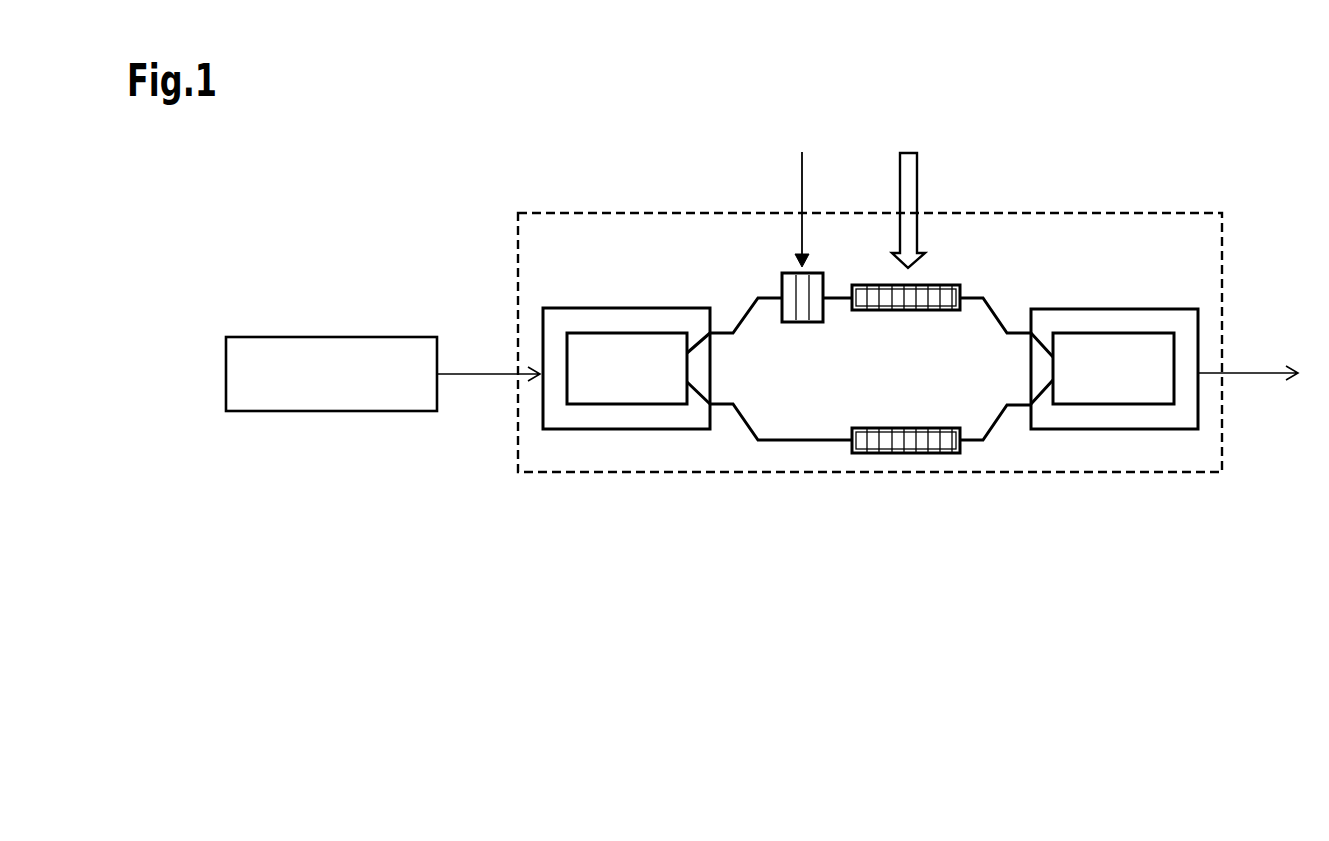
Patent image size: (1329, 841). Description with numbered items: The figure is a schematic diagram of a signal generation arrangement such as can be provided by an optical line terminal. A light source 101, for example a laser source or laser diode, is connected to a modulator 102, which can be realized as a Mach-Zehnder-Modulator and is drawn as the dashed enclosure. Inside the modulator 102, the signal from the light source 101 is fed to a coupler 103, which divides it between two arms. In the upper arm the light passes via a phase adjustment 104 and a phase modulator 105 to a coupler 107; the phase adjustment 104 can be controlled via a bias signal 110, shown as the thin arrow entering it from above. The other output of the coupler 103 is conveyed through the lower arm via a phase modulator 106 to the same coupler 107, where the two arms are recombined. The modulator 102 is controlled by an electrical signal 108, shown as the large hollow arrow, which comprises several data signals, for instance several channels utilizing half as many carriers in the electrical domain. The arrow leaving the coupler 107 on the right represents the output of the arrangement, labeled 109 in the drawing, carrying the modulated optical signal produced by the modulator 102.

The light source 101 is at (268, 335).
The modulator 102 is at (517, 290).
The coupler 103 is at (620, 307).
The phase adjustment 104 is at (781, 283).
The phase modulator 105 is at (941, 285).
The phase modulator 106 is at (943, 427).
The coupler 107 is at (1087, 308).
The electrical signal 108 is at (909, 194).
The output optical signal 109 is at (1253, 372).
The bias signal 110 is at (803, 195).